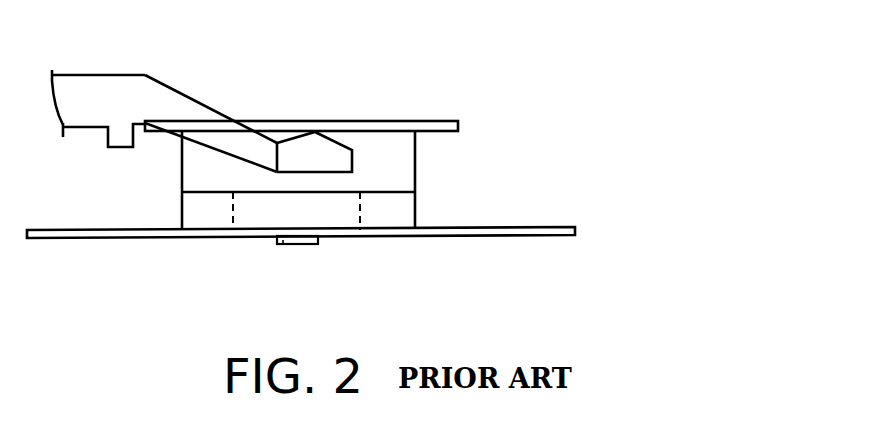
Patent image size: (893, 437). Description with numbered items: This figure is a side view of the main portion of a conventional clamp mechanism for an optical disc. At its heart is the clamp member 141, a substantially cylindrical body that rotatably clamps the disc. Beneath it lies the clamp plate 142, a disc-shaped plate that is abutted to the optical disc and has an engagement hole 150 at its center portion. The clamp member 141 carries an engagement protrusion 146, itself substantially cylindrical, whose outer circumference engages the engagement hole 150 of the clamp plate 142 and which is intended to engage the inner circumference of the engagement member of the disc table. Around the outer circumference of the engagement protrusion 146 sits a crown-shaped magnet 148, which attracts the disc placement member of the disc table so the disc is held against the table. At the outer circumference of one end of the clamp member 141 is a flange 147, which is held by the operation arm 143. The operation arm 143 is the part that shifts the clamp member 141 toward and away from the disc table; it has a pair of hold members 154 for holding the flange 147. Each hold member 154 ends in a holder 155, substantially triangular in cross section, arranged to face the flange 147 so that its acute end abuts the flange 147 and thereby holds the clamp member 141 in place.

The clamp member 141 is at (407, 165).
The clamp plate 142 is at (110, 240).
The operation arm 143 is at (80, 88).
The engagement protrusion 146 is at (312, 243).
The flange 147 is at (457, 123).
The magnet 148 is at (407, 208).
The engagement hole 150 is at (285, 250).
The hold member 154 is at (180, 100).
The holder 155 is at (322, 150).